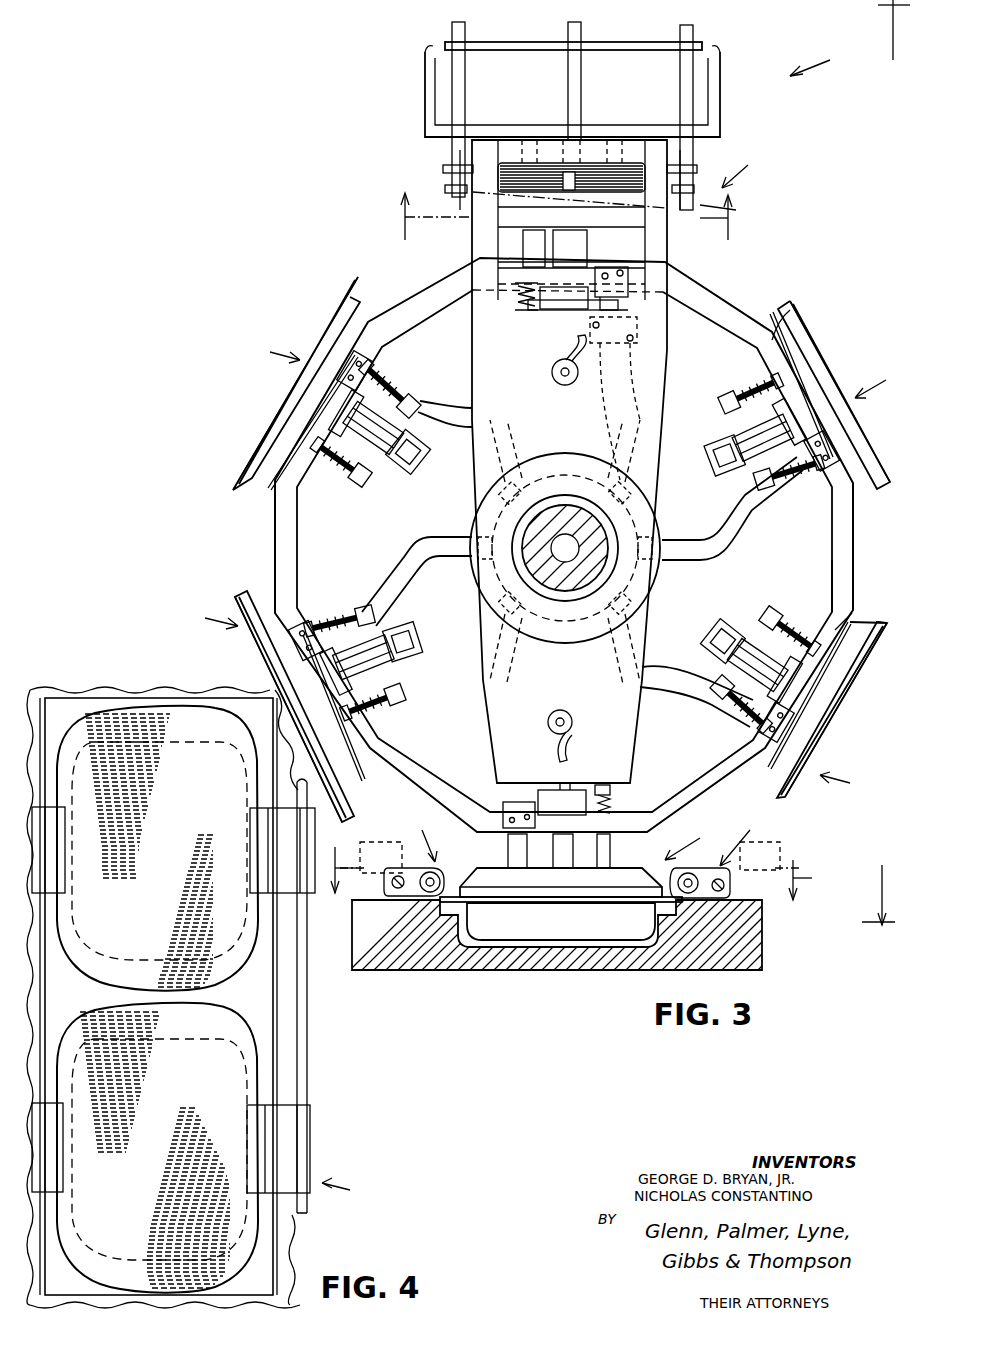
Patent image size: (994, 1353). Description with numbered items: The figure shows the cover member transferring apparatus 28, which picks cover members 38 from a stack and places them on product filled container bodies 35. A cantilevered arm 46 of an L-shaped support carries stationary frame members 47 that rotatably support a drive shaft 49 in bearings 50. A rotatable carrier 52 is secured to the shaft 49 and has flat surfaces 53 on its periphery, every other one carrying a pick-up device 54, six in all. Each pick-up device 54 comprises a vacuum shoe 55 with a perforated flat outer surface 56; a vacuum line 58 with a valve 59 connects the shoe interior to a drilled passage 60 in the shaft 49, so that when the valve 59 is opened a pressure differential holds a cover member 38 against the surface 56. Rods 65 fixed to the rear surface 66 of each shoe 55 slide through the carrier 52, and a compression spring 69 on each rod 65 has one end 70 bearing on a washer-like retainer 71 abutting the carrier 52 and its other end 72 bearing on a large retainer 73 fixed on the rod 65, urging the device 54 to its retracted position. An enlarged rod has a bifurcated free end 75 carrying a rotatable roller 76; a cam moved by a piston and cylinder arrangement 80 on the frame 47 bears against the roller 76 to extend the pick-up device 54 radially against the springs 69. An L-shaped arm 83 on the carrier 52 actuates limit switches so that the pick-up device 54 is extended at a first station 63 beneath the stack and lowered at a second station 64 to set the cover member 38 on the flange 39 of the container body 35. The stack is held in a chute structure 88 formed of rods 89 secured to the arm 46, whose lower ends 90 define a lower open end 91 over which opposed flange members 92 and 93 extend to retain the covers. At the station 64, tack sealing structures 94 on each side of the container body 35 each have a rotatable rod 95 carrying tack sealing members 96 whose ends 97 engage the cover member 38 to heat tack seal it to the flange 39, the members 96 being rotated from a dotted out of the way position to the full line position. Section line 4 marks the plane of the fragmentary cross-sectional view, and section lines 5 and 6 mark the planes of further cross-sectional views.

In FIG. 3, the cover member transferring apparatus 28 is at (825, 54).
In FIG. 3, the container body 35 is at (580, 935).
In FIG. 3, the cover member 38 is at (345, 312).
In FIG. 4, the cover member 38 is at (225, 962).
In FIG. 3, the flat flange 39 is at (548, 905).
In FIG. 3, the cantilevered arm 46 is at (430, 88).
In FIG. 3, the stationary frame member 47 is at (478, 340).
In FIG. 3, the drive shaft 49 is at (546, 528).
In FIG. 3, the bearings 50 is at (525, 565).
In FIG. 3, the rotatable carrier 52 is at (850, 545).
In FIG. 3, the flat surfaces 53 is at (722, 310).
In FIG. 3, the pick-up device 54 is at (542, 565).
In FIG. 3, the vacuum shoe 55 is at (812, 360).
In FIG. 3, the flat outer surface 56 is at (278, 428).
In FIG. 3, the vacuum line 58 is at (420, 548).
In FIG. 3, the valve 59 is at (655, 530).
In FIG. 3, the drilled passage 60 is at (602, 525).
In FIG. 3, the first station 63 is at (749, 162).
In FIG. 3, the second station 64 is at (693, 835).
In FIG. 3, the rods 65 is at (520, 240).
In FIG. 3, the rear surface 66 is at (790, 332).
In FIG. 3, the compression spring 69 is at (338, 472).
In FIG. 3, the spring end 70 is at (785, 600).
In FIG. 3, the washer-like retainer 71 is at (372, 710).
In FIG. 3, the other spring end 72 is at (785, 618).
In FIG. 3, the large retainer 73 is at (400, 680).
In FIG. 3, the bifurcated free end 75 is at (382, 455).
In FIG. 3, the rotatable roller 76 is at (408, 450).
In FIG. 3, the piston and cylinder arrangement 80 is at (552, 376).
In FIG. 3, the L-shaped arm 83 is at (378, 372).
In FIG. 3, the chute structure 88 is at (714, 46).
In FIG. 3, the rods 89 is at (466, 36).
In FIG. 3, the lower ends 90 is at (446, 188).
In FIG. 3, the lower open end 91 is at (690, 226).
In FIG. 3, the flange member 92 is at (455, 216).
In FIG. 3, the flange member 93 is at (736, 216).
In FIG. 3, the tack sealing structure 94 is at (575, 852).
In FIG. 4, the tack sealing structure 94 is at (351, 1190).
In FIG. 3, the rotatable rod 95 is at (400, 888).
In FIG. 4, the rotatable rod 95 is at (308, 1060).
In FIG. 3, the tack sealing member 96 is at (405, 865).
In FIG. 4, the tack sealing member 96 is at (40, 862).
In FIG. 3, the ends 97 is at (440, 880).
In FIG. 4, the ends 97 is at (60, 830).
In FIG. 3, the section line 4 is at (802, 880).
In FIG. 4, the section line 4 is at (335, 870).
In FIG. 3, the section line 5 is at (875, 466).
In FIG. 3, the section line 6 is at (565, 216).